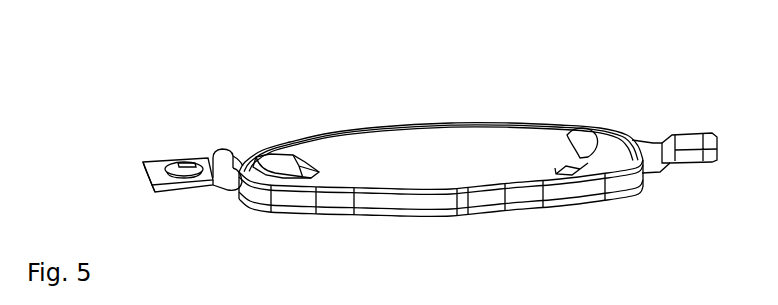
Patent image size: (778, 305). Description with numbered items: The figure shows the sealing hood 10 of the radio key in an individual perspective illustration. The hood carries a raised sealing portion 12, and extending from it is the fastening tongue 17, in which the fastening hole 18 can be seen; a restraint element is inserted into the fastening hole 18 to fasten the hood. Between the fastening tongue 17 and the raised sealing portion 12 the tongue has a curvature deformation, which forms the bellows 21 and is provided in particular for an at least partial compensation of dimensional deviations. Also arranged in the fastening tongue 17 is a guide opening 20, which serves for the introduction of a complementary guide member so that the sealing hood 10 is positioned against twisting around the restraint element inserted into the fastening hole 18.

The sealing hood 10 is at (511, 86).
The raised sealing portion 12 is at (388, 219).
The fastening tongue 17 is at (170, 195).
The fastening hole 18 is at (184, 157).
The guide opening 20 is at (175, 160).
The bellows 21 is at (278, 138).